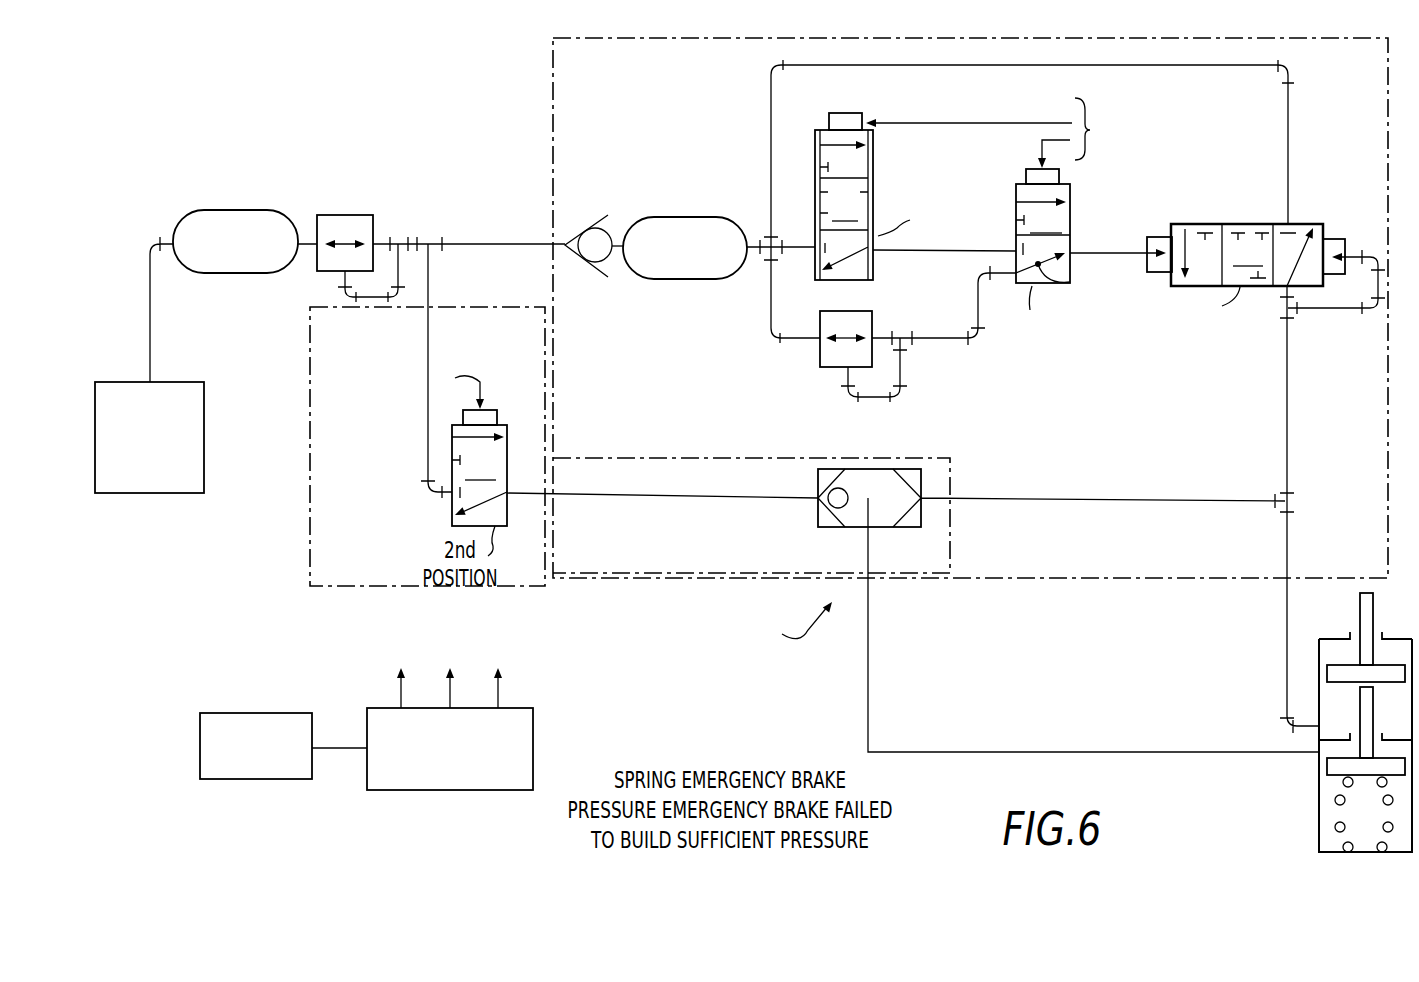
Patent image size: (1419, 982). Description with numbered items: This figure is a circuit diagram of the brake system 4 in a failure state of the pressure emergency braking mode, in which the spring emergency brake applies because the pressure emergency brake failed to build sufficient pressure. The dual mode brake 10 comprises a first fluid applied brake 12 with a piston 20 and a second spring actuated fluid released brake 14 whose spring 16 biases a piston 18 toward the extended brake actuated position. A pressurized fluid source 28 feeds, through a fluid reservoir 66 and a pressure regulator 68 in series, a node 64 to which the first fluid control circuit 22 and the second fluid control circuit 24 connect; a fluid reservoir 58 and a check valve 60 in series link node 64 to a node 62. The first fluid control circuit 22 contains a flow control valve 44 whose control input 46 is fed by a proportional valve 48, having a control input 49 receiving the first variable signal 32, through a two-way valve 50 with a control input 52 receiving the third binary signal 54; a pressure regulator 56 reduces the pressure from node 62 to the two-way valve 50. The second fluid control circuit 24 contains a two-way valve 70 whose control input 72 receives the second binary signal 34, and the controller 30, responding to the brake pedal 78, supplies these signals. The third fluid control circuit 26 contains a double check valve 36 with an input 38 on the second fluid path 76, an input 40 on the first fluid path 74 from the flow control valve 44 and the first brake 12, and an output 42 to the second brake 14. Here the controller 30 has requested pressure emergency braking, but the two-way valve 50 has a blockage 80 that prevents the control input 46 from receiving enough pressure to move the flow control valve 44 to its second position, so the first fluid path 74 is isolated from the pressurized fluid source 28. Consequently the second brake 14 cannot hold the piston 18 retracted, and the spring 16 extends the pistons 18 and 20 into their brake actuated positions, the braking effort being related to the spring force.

The brake system 4 is at (800, 627).
The dual mode brake 10 is at (1308, 804).
The first fluid applied brake 12 is at (1319, 672).
The second spring actuated fluid released brake 14 is at (1318, 767).
The spring 16 is at (1333, 828).
The piston 18 is at (1332, 757).
The piston 20 is at (1378, 656).
The first fluid control circuit 22 is at (553, 90).
The second fluid control circuit 24 is at (385, 586).
The third fluid control circuit 26 is at (748, 573).
The pressurized fluid source 28 is at (204, 465).
The controller 30 is at (408, 790).
The first variable signal 32 is at (931, 120).
The second binary signal 34 is at (447, 694).
The double check valve 36 is at (852, 492).
The input 38 is at (818, 497).
The input 40 is at (922, 497).
The output 42 is at (868, 528).
The flow control valve 44 is at (1302, 228).
The control input 46 is at (1162, 275).
The proportional valve 48 is at (876, 178).
The control input 49 is at (828, 118).
The two-way valve 50 is at (1072, 232).
The control input 52 is at (1060, 177).
The third binary signal 54 is at (1040, 140).
The pressure regulator 56 is at (874, 322).
The fluid reservoir 58 is at (690, 217).
The check valve 60 is at (592, 225).
The node 62 is at (770, 255).
The node 64 is at (429, 240).
The fluid reservoir 66 is at (240, 210).
The pressure regulator 68 is at (346, 215).
The two-way valve 70 is at (452, 518).
The control input 72 is at (498, 413).
The first fluid path 74 is at (1288, 362).
The second fluid path 76 is at (630, 494).
The brake pedal 78 is at (252, 712).
The blockage 80 is at (1070, 284).